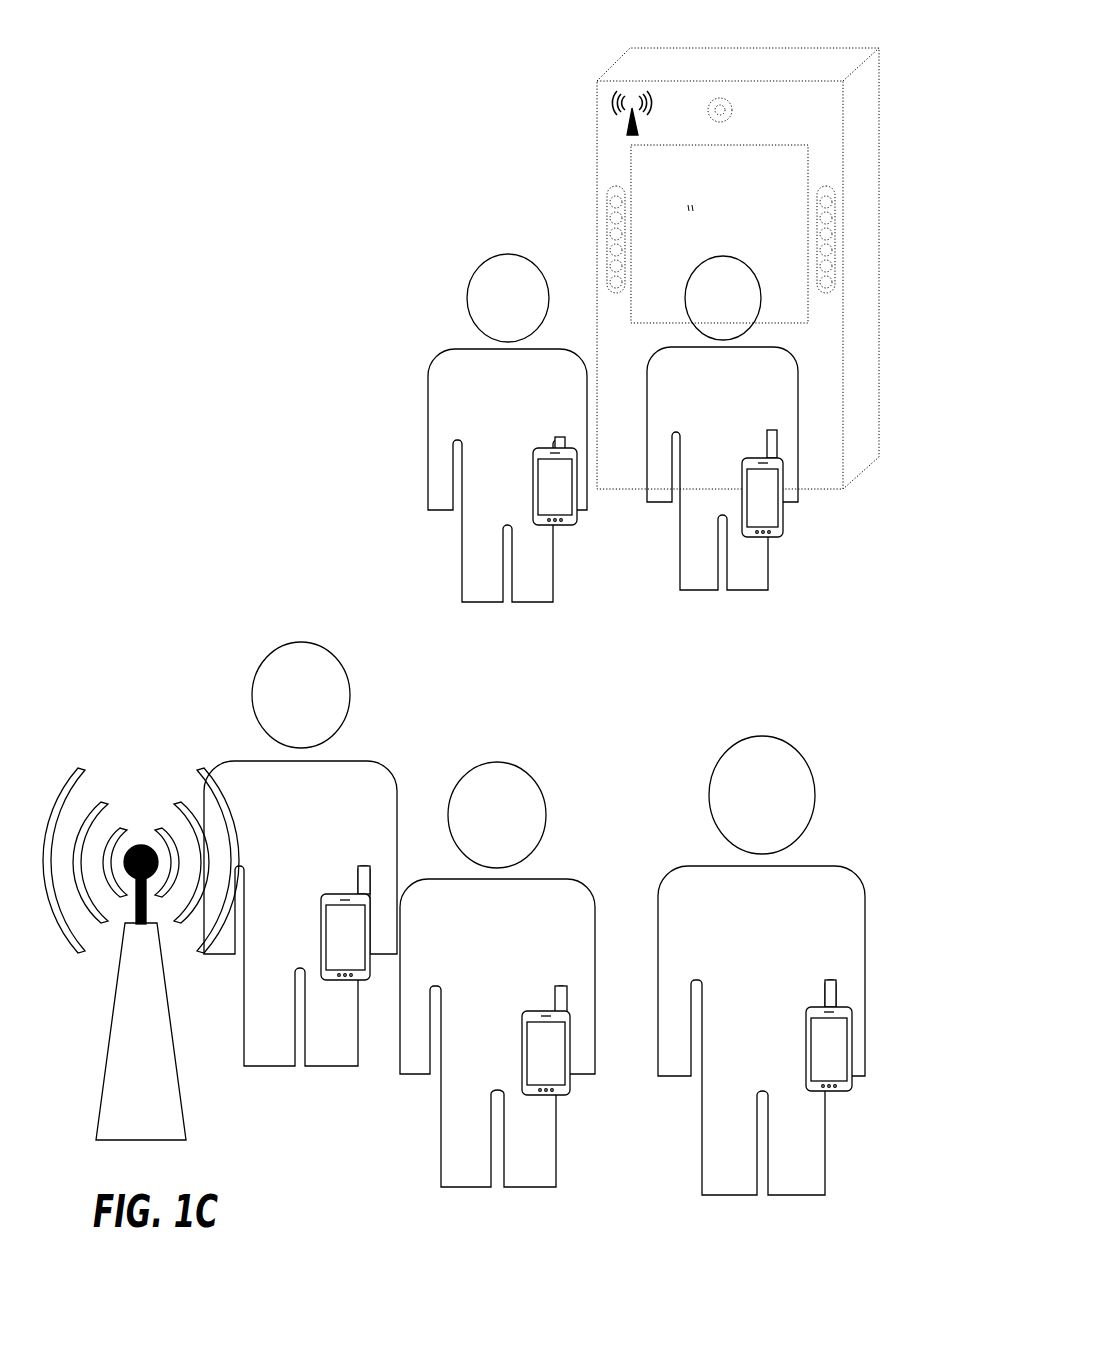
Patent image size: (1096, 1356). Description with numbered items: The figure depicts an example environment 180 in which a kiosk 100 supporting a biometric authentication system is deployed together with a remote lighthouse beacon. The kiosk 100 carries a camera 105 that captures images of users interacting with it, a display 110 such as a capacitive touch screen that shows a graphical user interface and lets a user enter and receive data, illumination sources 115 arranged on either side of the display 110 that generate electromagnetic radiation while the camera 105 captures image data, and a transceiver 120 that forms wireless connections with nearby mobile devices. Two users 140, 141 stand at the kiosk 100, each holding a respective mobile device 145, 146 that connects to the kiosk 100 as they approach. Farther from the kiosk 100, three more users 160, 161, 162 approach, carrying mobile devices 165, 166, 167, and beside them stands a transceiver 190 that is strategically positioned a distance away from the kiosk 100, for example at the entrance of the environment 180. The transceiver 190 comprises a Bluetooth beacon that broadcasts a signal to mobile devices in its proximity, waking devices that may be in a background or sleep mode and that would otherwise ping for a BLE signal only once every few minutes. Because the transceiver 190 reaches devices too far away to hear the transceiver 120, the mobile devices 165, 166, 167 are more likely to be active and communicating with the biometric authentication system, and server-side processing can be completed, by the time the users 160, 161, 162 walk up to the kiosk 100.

The kiosk 100 is at (841, 62).
The camera 105 is at (721, 107).
The display 110 is at (765, 160).
The illumination sources 115 is at (612, 208).
The transceiver 120 is at (627, 122).
The user 140 is at (770, 378).
The user 141 is at (565, 408).
The mobile device 145 is at (745, 463).
The mobile device 146 is at (535, 457).
The user 160 is at (365, 782).
The user 161 is at (561, 904).
The user 162 is at (832, 892).
The mobile device 165 is at (321, 900).
The mobile device 166 is at (523, 1016).
The mobile device 167 is at (805, 1014).
The example environment 180 is at (282, 195).
The transceiver 190 is at (145, 1092).